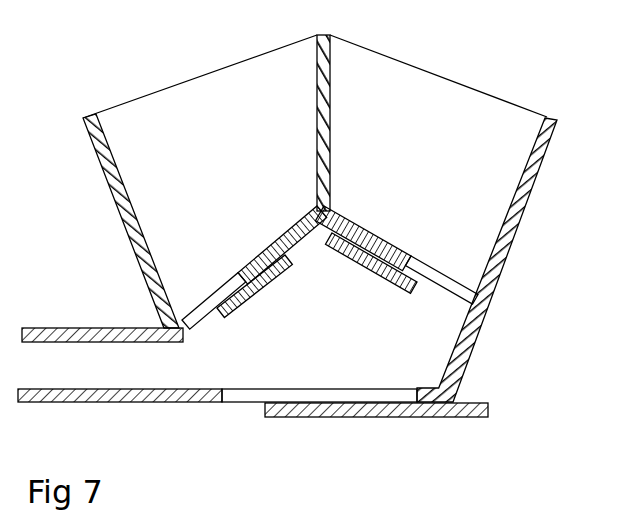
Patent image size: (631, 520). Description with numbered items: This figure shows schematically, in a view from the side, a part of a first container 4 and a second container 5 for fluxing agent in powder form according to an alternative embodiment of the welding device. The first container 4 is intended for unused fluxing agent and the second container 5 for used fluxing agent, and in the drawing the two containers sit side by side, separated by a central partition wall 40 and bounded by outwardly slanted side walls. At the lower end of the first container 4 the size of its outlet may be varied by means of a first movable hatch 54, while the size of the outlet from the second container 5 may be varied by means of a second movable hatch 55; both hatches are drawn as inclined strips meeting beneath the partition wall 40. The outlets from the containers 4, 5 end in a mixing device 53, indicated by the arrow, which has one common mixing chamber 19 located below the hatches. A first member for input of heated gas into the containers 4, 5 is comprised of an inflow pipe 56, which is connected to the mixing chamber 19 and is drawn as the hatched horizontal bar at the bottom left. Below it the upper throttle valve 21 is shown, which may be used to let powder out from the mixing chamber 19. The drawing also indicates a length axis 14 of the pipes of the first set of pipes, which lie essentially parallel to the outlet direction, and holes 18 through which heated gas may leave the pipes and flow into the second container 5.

The first container 4 is at (257, 115).
The second container 5 is at (368, 115).
The length axes 14 is at (158, 316).
The holes 18 is at (463, 290).
The mixing chamber 19 is at (427, 338).
The upper throttle valve 21 is at (347, 410).
The partition wall 40 is at (328, 70).
The mixing device 53 is at (500, 389).
The first movable hatch 54 is at (245, 295).
The second movable hatch 55 is at (412, 260).
The inflow pipe 56 is at (105, 375).